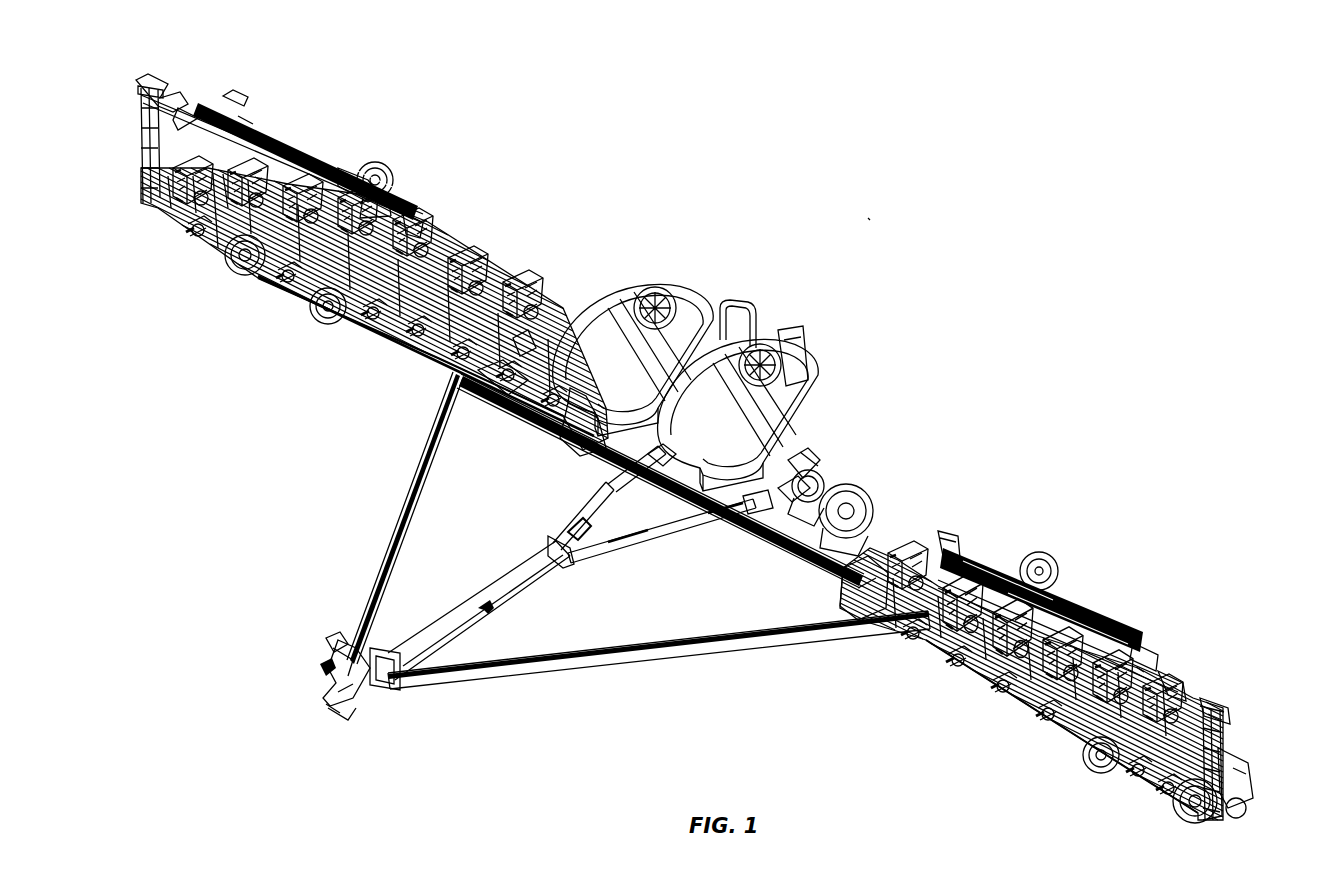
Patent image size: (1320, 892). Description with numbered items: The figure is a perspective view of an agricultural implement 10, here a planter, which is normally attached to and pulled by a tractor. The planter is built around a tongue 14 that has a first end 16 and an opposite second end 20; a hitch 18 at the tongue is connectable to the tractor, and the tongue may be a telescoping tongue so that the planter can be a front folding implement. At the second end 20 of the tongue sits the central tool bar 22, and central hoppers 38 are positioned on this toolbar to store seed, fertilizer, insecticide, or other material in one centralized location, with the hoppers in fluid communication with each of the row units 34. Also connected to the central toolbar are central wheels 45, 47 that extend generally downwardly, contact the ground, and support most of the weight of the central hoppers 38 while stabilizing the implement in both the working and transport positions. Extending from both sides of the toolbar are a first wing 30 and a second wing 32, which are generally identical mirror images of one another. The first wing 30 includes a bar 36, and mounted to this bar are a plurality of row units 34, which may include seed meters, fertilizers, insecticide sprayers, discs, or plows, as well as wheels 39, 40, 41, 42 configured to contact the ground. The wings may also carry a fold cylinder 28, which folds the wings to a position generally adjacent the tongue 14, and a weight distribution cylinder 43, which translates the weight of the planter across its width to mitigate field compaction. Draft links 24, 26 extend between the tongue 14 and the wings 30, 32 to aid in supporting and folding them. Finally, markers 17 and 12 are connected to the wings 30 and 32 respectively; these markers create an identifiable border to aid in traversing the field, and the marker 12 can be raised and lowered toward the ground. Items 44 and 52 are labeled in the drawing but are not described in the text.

The agricultural implement 10 is at (864, 205).
The marker 12 is at (1152, 654).
The tongue 14 is at (500, 562).
The first end 16 is at (372, 636).
The hitch 18 is at (322, 678).
The second end 20 is at (622, 518).
The central tool bar 22 is at (750, 548).
The draft link 24 is at (678, 652).
The draft link 26 is at (392, 518).
The fold cylinder 28 is at (588, 478).
The first wing 30 is at (372, 106).
The second wing 32 is at (1118, 566).
The row unit 34 is at (445, 290).
The bar 36 is at (362, 322).
The central hopper 38 is at (695, 290).
The wheel 39 is at (1170, 808).
The wheel 40 is at (1082, 758).
The wheel 41 is at (305, 305).
The wheel 42 is at (215, 258).
The weight distribution cylinder 43 is at (510, 335).
The actuator bracket 44 is at (805, 455).
The central wheel 45 is at (848, 492).
The central wheel 47 is at (815, 470).
The end bracket 52 is at (1208, 722).
The marker 17 is at (200, 108).